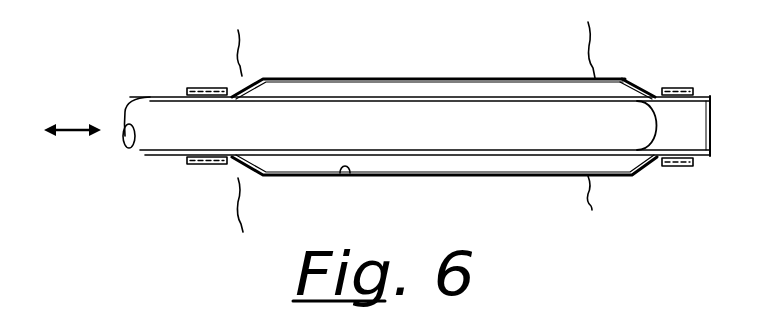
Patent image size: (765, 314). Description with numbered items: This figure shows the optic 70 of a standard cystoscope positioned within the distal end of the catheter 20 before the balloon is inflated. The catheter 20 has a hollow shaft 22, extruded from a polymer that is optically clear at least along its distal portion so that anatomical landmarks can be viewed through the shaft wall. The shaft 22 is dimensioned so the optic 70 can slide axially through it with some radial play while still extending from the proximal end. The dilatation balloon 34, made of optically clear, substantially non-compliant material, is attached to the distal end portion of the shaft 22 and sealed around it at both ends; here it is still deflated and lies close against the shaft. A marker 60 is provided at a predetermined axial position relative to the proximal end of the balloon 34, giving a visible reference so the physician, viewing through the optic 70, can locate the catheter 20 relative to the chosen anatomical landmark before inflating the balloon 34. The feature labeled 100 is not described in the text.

The catheter 20 is at (143, 95).
The hollow shaft 22 is at (423, 95).
The dilatation balloon 34 is at (627, 78).
The marker 60 is at (207, 165).
The optic 70 is at (293, 138).
The protrusion 100 is at (347, 174).